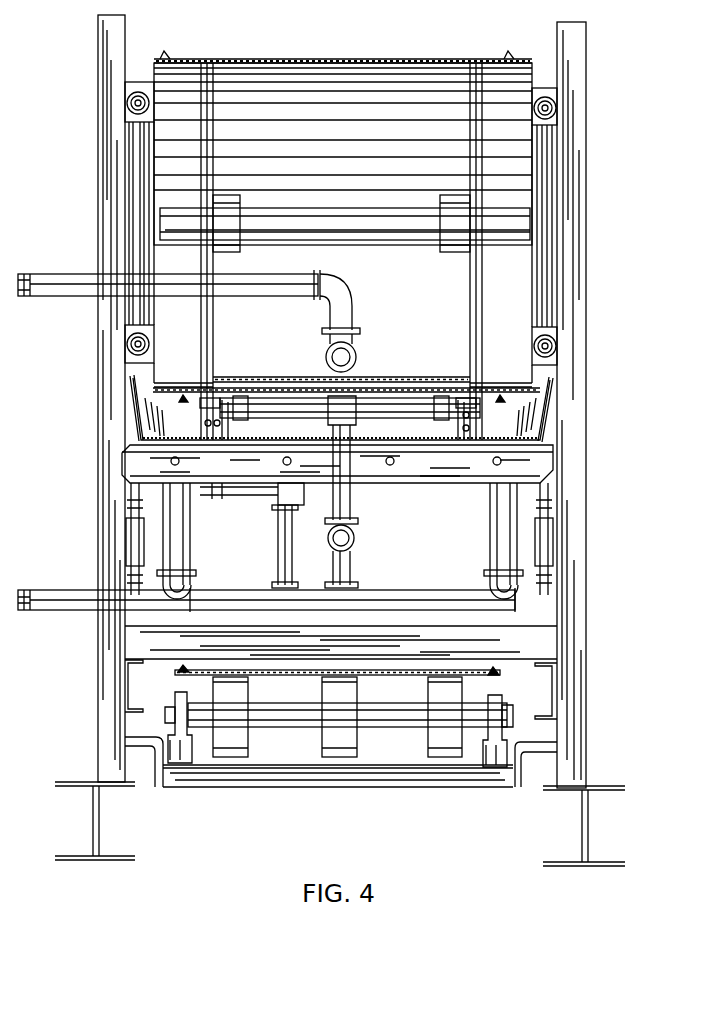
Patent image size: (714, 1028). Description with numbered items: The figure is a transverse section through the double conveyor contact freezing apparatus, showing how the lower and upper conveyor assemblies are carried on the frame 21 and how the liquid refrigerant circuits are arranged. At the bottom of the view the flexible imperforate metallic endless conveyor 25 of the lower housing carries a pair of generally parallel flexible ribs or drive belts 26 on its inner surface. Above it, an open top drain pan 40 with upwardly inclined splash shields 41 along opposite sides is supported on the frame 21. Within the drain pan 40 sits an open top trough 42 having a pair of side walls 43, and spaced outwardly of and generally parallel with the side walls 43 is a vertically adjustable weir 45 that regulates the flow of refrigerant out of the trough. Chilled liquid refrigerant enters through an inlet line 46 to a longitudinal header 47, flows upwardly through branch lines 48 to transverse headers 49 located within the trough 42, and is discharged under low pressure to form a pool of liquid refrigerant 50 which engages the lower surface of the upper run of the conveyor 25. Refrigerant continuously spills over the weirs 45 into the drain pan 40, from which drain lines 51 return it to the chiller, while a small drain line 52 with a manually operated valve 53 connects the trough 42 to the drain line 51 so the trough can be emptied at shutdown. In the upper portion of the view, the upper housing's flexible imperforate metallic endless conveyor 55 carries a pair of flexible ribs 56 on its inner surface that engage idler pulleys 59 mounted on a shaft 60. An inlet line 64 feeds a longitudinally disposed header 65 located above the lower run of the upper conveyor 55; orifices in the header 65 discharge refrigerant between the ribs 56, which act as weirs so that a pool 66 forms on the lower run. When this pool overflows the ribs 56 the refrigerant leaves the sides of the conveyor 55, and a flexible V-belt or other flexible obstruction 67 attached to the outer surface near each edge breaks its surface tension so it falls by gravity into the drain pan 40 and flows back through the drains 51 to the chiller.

The frame 21 is at (108, 735).
The endless conveyor 25 is at (378, 693).
The drive belts 26 is at (200, 404).
The drain pan 40 is at (548, 432).
The splash shields 41 is at (128, 388).
The trough 42 is at (352, 420).
The side walls 43 is at (225, 430).
The weir 45 is at (190, 384).
The inlet line 46 is at (350, 576).
The longitudinal header 47 is at (356, 540).
The branch lines 48 is at (352, 498).
The transverse headers 49 is at (386, 394).
The pool of liquid refrigerant 50 is at (304, 440).
The drain lines 51 is at (190, 538).
The small drain line 52 is at (284, 560).
The manually operated valve 53 is at (286, 496).
The endless conveyor 55 is at (420, 60).
The flexible ribs 56 is at (222, 62).
The idler pulleys 59 is at (213, 160).
The shaft 60 is at (358, 212).
The inlet line 64 is at (252, 284).
The header 65 is at (360, 346).
The pool of refrigerant 66 is at (434, 378).
The flexible V-belt 67 is at (512, 58).